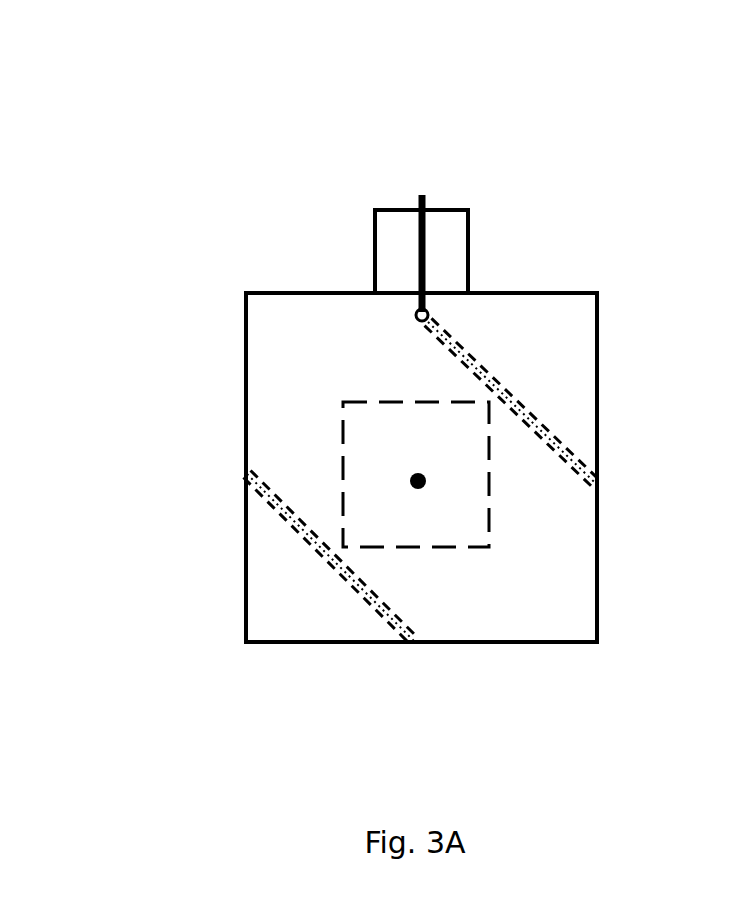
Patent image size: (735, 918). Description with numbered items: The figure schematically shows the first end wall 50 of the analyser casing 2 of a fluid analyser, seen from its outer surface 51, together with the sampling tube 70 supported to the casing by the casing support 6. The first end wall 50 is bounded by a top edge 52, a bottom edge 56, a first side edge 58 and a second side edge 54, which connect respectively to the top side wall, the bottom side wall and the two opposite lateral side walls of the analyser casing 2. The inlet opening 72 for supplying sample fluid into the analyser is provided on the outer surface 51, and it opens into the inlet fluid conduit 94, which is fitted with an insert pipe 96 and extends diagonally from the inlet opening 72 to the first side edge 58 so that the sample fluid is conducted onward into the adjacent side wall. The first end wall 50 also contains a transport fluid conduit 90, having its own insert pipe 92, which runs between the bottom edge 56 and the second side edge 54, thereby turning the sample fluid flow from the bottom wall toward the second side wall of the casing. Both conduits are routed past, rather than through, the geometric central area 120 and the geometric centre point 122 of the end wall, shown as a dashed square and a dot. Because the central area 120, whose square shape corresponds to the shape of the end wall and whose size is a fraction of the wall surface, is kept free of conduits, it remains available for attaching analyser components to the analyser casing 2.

The analyser casing 2 is at (202, 218).
The casing support 6 is at (390, 209).
The first end wall 50 is at (290, 292).
The outer surface 51 is at (265, 618).
The top edge 52 is at (515, 292).
The second side edge 54 is at (246, 380).
The bottom edge 56 is at (287, 643).
The first side edge 58 is at (597, 342).
The sampling tube 70 is at (422, 196).
The inlet opening 72 is at (415, 320).
The transport fluid conduit 90 is at (293, 537).
The insert pipe 92 is at (327, 570).
The inlet fluid conduit 94 is at (557, 452).
The insert pipe 96 is at (592, 474).
The geometric central area 120 is at (465, 548).
The geometric centre point 122 is at (410, 478).